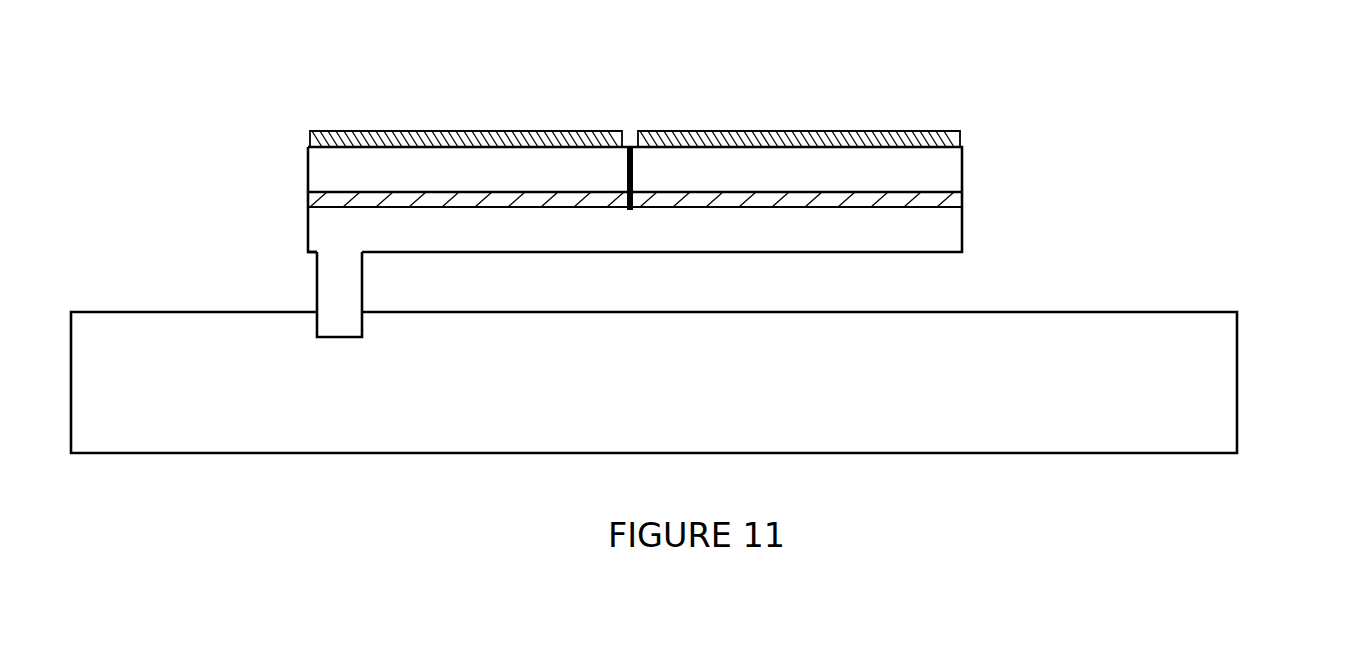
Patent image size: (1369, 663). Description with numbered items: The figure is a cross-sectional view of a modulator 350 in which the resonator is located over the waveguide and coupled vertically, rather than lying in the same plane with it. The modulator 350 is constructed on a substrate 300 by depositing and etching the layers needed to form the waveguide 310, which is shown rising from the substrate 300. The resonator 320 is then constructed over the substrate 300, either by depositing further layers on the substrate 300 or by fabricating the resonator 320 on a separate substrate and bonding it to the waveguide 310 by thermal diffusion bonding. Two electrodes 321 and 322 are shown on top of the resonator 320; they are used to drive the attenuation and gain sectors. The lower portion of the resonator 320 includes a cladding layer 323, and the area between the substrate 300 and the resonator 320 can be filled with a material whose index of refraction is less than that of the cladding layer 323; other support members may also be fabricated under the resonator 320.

The substrate 300 is at (1087, 418).
The waveguide 310 is at (317, 293).
The resonator 320 is at (985, 123).
The first electrode 321 is at (514, 131).
The second electrode 322 is at (766, 131).
The cladding layer 323 is at (655, 240).
The modulator 350 is at (1244, 179).